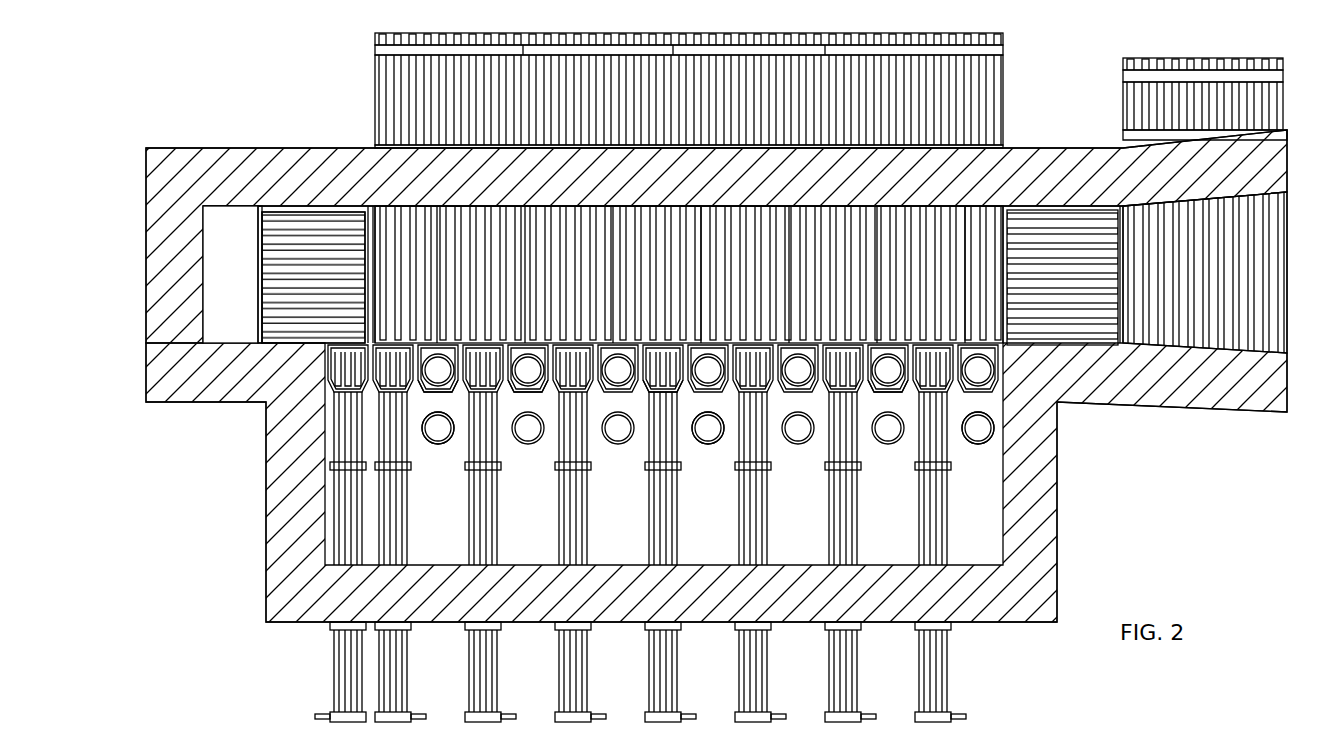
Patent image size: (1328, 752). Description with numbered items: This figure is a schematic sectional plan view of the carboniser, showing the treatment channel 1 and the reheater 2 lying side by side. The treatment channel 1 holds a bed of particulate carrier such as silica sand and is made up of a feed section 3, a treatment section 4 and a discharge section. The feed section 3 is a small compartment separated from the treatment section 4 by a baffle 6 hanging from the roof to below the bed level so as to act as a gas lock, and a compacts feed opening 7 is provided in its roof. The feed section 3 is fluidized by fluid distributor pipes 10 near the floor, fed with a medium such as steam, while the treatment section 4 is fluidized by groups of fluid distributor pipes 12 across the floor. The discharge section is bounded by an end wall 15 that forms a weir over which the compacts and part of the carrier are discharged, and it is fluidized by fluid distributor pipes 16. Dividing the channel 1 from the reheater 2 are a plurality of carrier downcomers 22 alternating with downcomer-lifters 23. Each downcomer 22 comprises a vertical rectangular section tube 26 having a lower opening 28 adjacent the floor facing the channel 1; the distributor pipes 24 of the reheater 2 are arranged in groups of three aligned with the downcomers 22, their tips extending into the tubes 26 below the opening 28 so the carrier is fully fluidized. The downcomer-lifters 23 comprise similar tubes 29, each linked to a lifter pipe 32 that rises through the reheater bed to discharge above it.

The treatment channel 1 is at (306, 158).
The reheater 2 is at (286, 495).
The feed section 3 is at (285, 298).
The treatment section 4 is at (613, 50).
The baffle 6 is at (370, 232).
The compacts feed opening 7 is at (226, 264).
The fluid distributor pipes 10 is at (281, 215).
The fluid distributor pipes 12 is at (1092, 290).
The end wall 15 is at (1135, 330).
The fluid distributor pipes 16 is at (1266, 318).
The carrier downcomers 22 is at (374, 389).
The downcomer-lifters 23 is at (708, 399).
The distributor pipes 24 is at (350, 540).
The tubes 26 is at (680, 392).
The lower opening 28 is at (438, 392).
The tubes 29 is at (526, 392).
The lifter pipe 32 is at (446, 444).